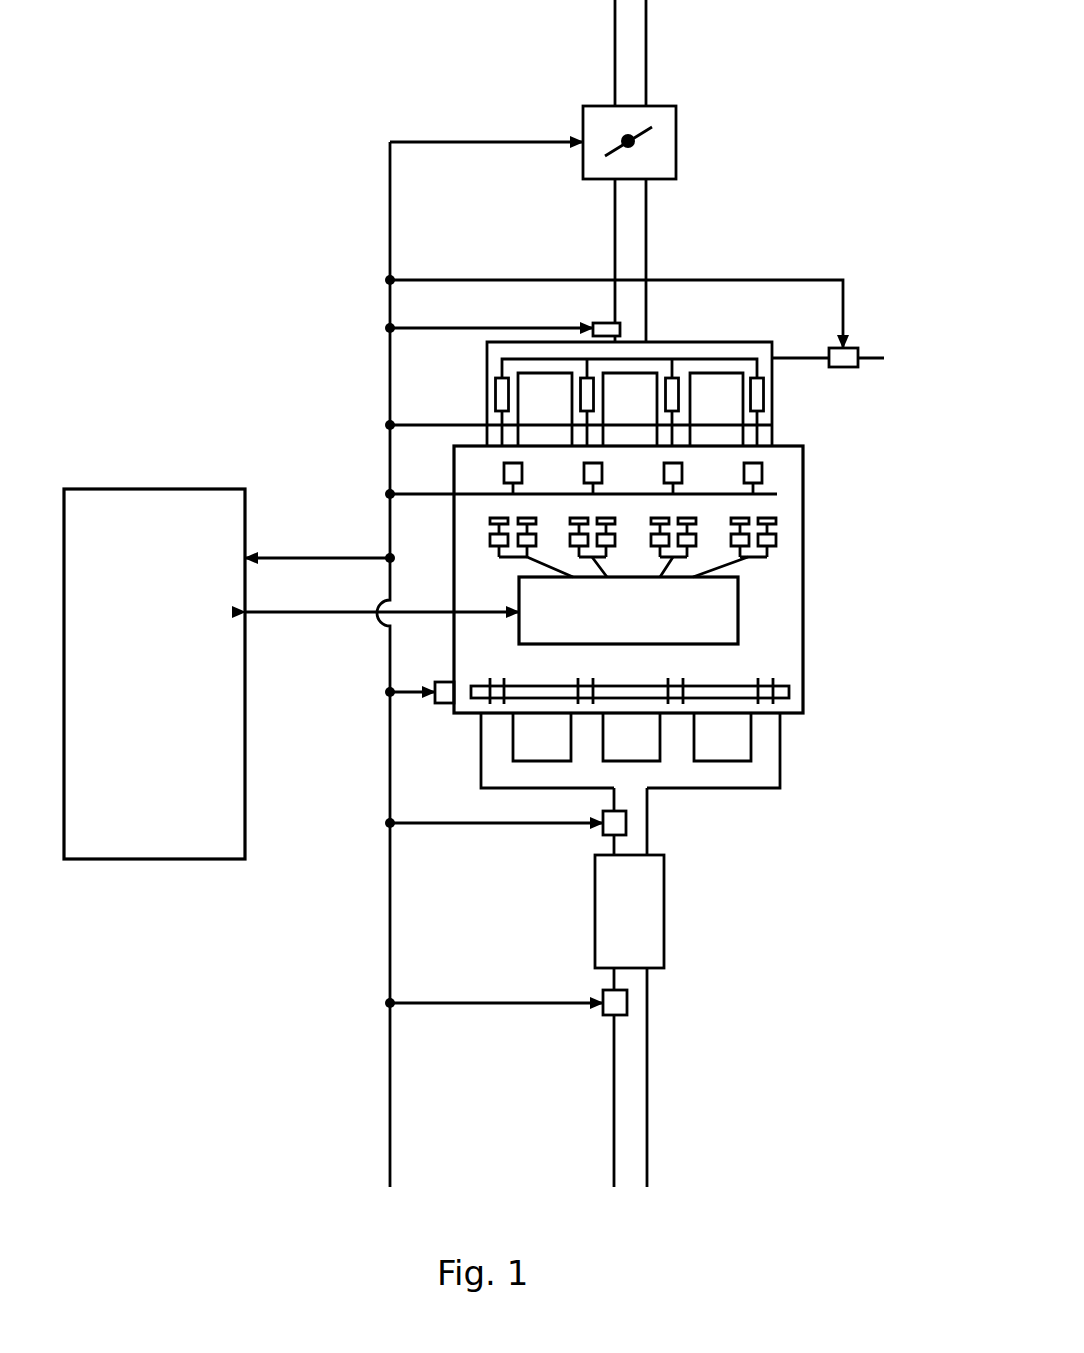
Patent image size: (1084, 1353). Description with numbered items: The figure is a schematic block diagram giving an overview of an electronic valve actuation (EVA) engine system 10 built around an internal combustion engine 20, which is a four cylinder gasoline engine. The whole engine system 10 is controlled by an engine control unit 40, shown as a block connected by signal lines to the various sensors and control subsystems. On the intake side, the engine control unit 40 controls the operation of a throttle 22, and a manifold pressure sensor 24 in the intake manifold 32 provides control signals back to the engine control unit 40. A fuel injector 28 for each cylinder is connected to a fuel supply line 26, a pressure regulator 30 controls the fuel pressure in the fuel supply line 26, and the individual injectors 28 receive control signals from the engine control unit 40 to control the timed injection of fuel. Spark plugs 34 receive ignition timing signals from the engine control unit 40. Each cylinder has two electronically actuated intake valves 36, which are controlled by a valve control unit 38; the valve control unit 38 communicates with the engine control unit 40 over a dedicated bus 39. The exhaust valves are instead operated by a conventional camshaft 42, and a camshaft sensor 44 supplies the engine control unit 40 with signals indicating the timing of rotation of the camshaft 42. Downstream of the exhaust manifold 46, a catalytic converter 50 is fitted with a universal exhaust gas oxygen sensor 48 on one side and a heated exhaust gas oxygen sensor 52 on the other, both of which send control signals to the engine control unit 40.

The electronic valve actuation engine system 10 is at (168, 1183).
The internal combustion engine 20 is at (803, 590).
The throttle 22 is at (676, 147).
The manifold pressure sensor 24 is at (602, 323).
The fuel supply line 26 is at (650, 359).
The fuel injector 28 is at (492, 393).
The pressure regulator 30 is at (858, 352).
The intake manifold 32 is at (772, 433).
The spark plugs 34 is at (762, 473).
The electronically actuated intake valves 36 is at (776, 538).
The valve control unit 38 is at (738, 632).
The dedicated bus 39 is at (325, 612).
The engine control unit 40 is at (155, 489).
The camshaft 42 is at (789, 692).
The camshaft sensor 44 is at (435, 703).
The exhaust manifold 46 is at (780, 752).
The universal exhaust gas oxygen sensor 48 is at (600, 835).
The catalytic converter 50 is at (664, 913).
The heated exhaust gas oxygen sensor 52 is at (600, 1013).